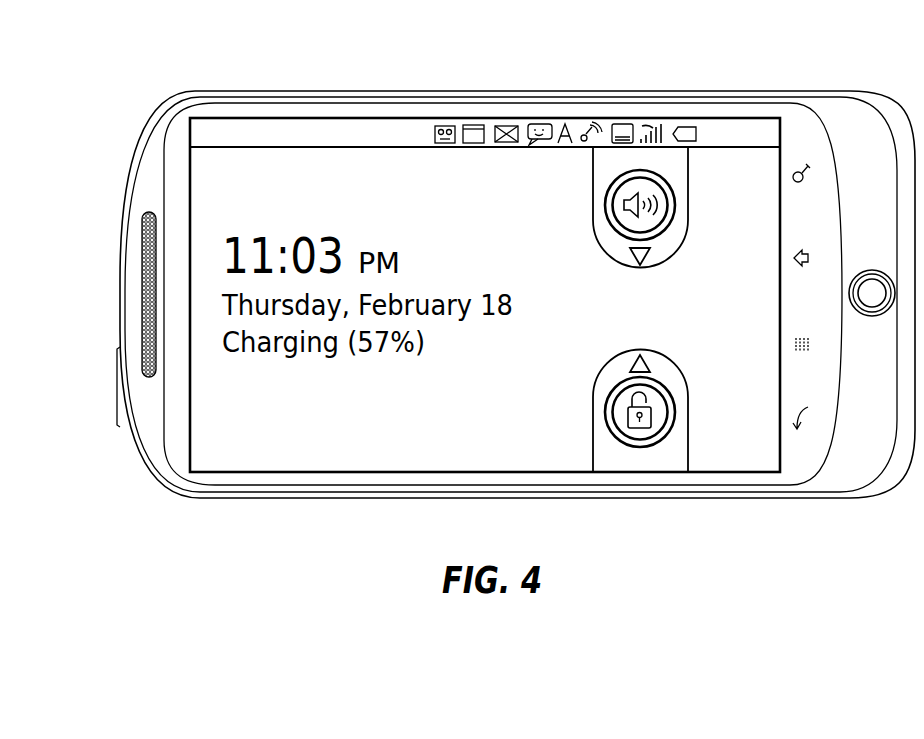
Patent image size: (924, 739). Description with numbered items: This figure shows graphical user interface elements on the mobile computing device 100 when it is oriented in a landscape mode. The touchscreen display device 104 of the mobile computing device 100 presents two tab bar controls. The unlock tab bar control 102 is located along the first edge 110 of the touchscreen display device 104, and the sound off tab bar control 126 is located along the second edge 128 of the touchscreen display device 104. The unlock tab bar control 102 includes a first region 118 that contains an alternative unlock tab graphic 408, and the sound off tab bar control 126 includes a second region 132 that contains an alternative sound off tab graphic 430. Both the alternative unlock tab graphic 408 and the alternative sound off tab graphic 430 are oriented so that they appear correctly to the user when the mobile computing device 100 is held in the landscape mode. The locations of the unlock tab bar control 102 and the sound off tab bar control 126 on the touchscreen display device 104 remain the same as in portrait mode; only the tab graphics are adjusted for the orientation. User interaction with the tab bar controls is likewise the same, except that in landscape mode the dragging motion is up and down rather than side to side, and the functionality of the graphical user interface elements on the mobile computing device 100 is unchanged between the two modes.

The mobile computing device 100 is at (178, 91).
The touchscreen display device 104 is at (782, 152).
The first edge 110 is at (638, 472).
The second edge 128 is at (640, 147).
The sound off tab bar control 126 is at (602, 250).
The second region 132 is at (675, 205).
The alternative sound off tab graphic 430 is at (652, 222).
The unlock tab bar control 102 is at (598, 385).
The first region 118 is at (675, 412).
The alternative unlock tab graphic 408 is at (648, 395).